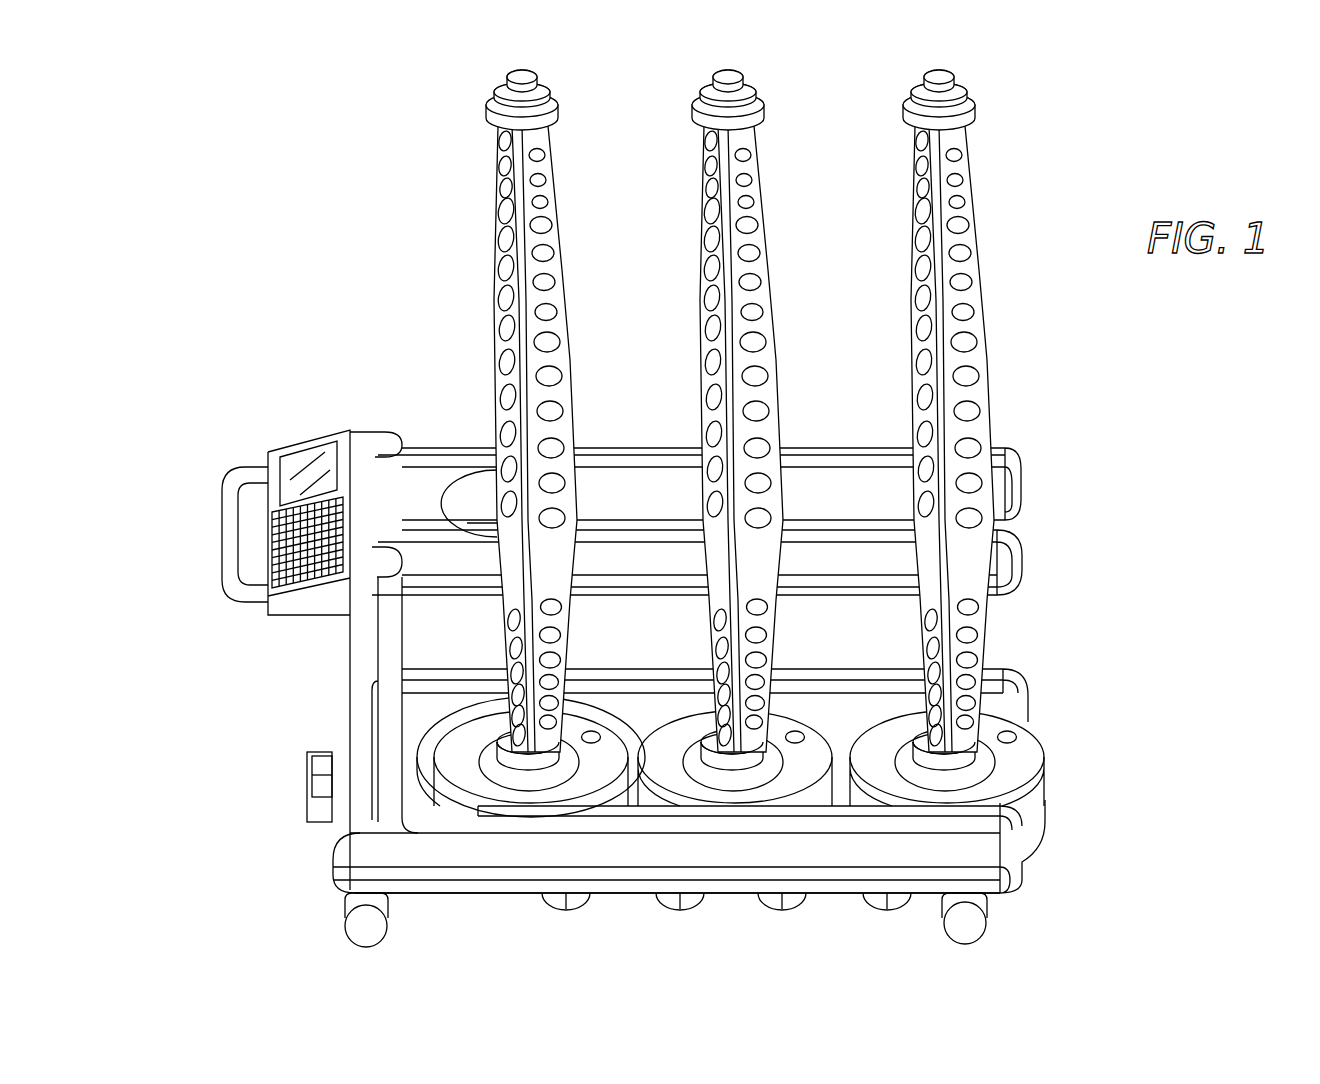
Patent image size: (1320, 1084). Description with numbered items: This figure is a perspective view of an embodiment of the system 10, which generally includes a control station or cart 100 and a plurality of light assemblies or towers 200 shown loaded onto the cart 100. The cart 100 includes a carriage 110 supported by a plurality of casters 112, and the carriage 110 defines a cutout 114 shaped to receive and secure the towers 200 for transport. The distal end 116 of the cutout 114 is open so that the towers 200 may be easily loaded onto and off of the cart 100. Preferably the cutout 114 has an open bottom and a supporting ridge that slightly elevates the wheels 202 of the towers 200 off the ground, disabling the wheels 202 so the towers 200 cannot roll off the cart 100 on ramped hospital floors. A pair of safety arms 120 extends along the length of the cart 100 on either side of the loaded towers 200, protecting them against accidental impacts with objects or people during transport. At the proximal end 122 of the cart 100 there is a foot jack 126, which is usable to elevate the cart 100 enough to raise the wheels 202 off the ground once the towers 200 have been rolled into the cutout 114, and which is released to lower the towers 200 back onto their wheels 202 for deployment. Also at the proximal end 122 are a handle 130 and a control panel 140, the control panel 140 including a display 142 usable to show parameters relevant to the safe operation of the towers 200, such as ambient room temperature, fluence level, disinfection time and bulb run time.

The system 10 is at (425, 240).
The control station or cart 100 is at (279, 600).
The carriage 110 is at (410, 893).
The casters 112 is at (352, 912).
The cutout 114 is at (1058, 823).
The distal end of the cutout 116 is at (1030, 710).
The safety arms 120 is at (1022, 475).
The proximal end of the cart 122 is at (337, 835).
The foot jack 126 is at (313, 792).
The handle 130 is at (222, 562).
The control panel 140 is at (268, 437).
The display 142 is at (312, 468).
The light assemblies or towers 200 is at (492, 72).
The wheels 202 is at (568, 908).